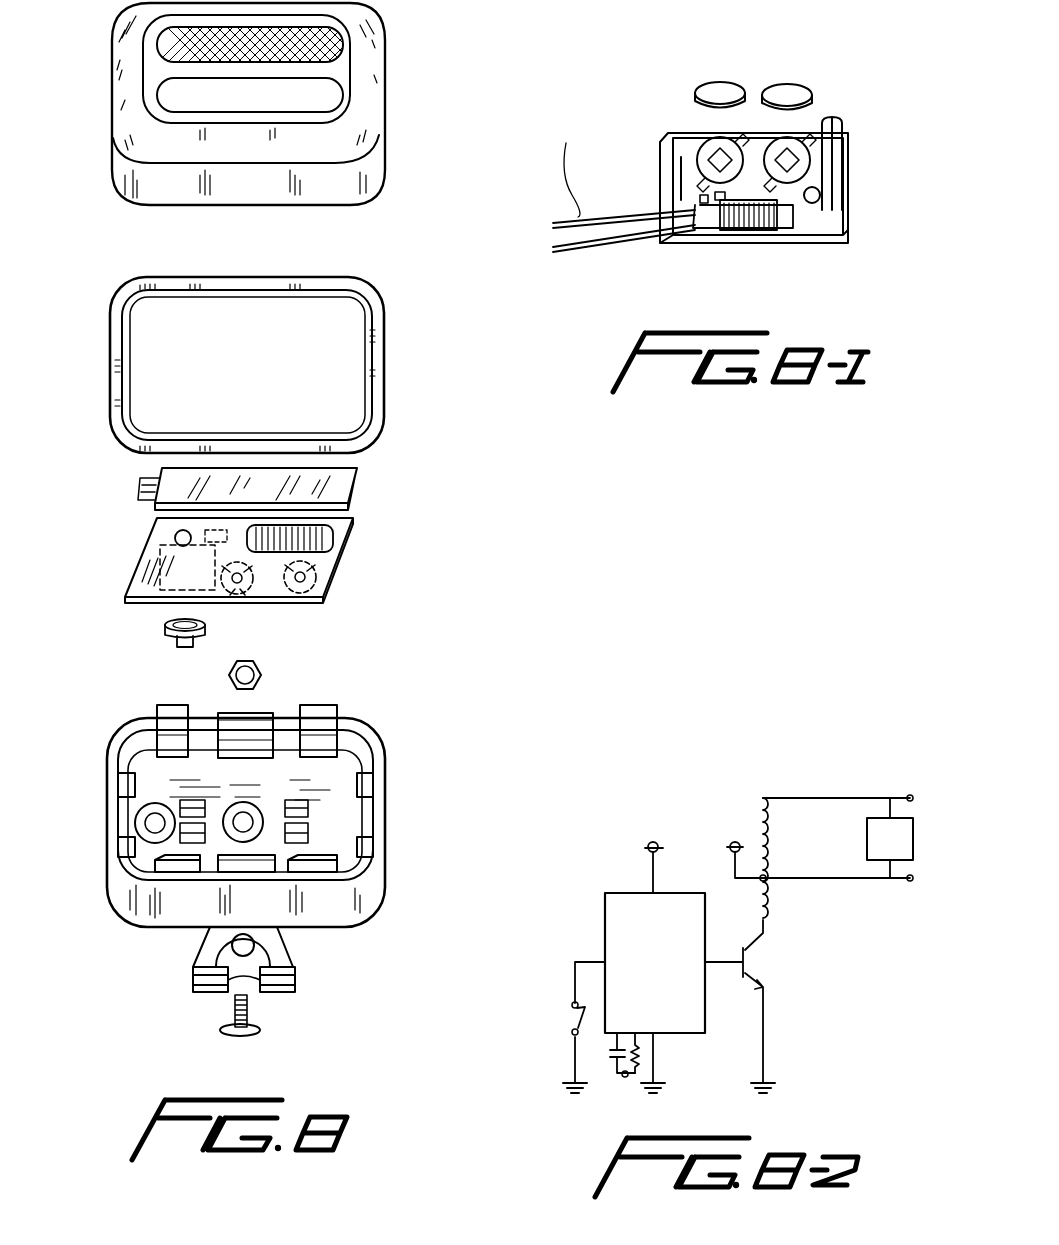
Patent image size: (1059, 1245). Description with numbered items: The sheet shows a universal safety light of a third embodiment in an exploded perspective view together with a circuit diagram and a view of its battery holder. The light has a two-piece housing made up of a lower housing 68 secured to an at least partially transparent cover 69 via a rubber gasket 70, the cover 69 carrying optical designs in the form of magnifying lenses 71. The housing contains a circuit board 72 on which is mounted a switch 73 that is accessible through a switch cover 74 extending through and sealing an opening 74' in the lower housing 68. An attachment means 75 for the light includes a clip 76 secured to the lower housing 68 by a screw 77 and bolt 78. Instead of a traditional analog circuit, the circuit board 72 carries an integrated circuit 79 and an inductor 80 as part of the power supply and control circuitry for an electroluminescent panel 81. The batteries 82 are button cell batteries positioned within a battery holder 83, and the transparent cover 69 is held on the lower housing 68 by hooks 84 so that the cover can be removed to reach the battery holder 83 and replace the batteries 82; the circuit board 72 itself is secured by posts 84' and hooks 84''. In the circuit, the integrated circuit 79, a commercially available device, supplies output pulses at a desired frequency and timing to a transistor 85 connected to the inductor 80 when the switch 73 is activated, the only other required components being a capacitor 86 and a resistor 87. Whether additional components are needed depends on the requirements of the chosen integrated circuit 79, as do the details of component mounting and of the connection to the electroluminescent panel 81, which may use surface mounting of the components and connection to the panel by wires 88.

In FIG. 8, the lower housing 68 is at (372, 812).
In FIG. 8, the transparent cover 69 is at (380, 130).
In FIG. 8, the rubber gasket 70 is at (385, 352).
In FIG. 8, the magnifying lenses 71 is at (330, 90).
In FIG. 8, the circuit board 72 is at (352, 540).
In FIG. 8, the switch 73 is at (168, 565).
In FIG. 8-1, the switch 73 is at (838, 183).
In FIG. 8-2, the switch 73 is at (570, 1015).
In FIG. 8, the switch cover 74 is at (142, 625).
In FIG. 8, the opening 74' is at (114, 801).
In FIG. 8, the attachment means 75 is at (320, 970).
In FIG. 8, the clip 76 is at (200, 950).
In FIG. 8, the screw 77 is at (250, 1015).
In FIG. 8, the bolt 78 is at (262, 675).
In FIG. 8, the integrated circuit 79 is at (176, 535).
In FIG. 8-1, the integrated circuit 79 is at (814, 203).
In FIG. 8-2, the integrated circuit 79 is at (605, 905).
In FIG. 8, the inductor 80 is at (320, 530).
In FIG. 8-1, the inductor 80 is at (750, 232).
In FIG. 8-2, the inductor 80 is at (762, 820).
In FIG. 8, the electroluminescent panel 81 is at (355, 478).
In FIG. 8-2, the electroluminescent panel 81 is at (918, 795).
In FIG. 8, the batteries 82 is at (320, 577).
In FIG. 8-1, the batteries 82 is at (770, 83).
In FIG. 8, the battery holder 83 is at (297, 583).
In FIG. 8-1, the battery holder 83 is at (710, 150).
In FIG. 8, the hooks 84 is at (249, 787).
In FIG. 8, the posts 84' is at (281, 782).
In FIG. 8, the hooks 84'' is at (269, 799).
In FIG. 8-2, the transistor 85 is at (765, 967).
In FIG. 8-2, the capacitor 86 is at (610, 1053).
In FIG. 8-2, the resistor 87 is at (643, 1050).
In FIG. 8-1, the wires 88 is at (619, 183).